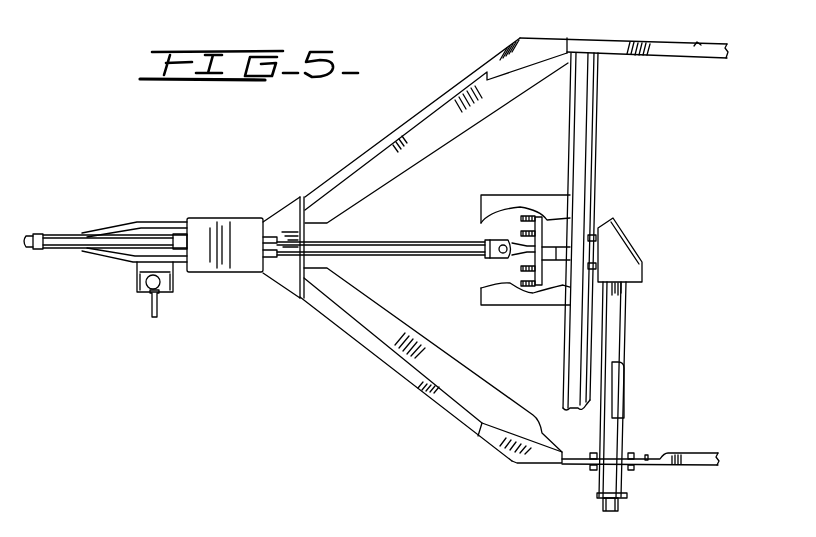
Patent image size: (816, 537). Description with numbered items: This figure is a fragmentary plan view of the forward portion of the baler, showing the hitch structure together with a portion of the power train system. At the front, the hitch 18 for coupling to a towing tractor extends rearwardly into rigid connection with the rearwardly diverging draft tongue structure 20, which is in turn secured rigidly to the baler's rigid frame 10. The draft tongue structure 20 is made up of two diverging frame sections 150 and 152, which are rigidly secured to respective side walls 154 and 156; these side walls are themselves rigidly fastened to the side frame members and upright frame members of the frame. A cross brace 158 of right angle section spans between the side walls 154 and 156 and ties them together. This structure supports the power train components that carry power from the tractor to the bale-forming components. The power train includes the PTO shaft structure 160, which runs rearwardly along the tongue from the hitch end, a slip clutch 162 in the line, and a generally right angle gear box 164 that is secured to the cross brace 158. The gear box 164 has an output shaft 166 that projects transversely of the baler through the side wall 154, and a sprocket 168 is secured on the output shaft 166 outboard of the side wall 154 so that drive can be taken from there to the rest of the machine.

The rigid frame 10 is at (697, 42).
The hitch 18 is at (128, 223).
The draft tongue structure 20 is at (372, 355).
The diverging frame section 150 is at (452, 412).
The diverging frame section 152 is at (422, 118).
The side wall 154 is at (664, 467).
The side wall 156 is at (689, 57).
The cross brace 158 is at (598, 142).
The PTO shaft structure 160 is at (385, 242).
The slip clutch 162 is at (503, 268).
The right angle gear box 164 is at (620, 256).
The output shaft 166 is at (617, 372).
The sprocket 168 is at (600, 500).